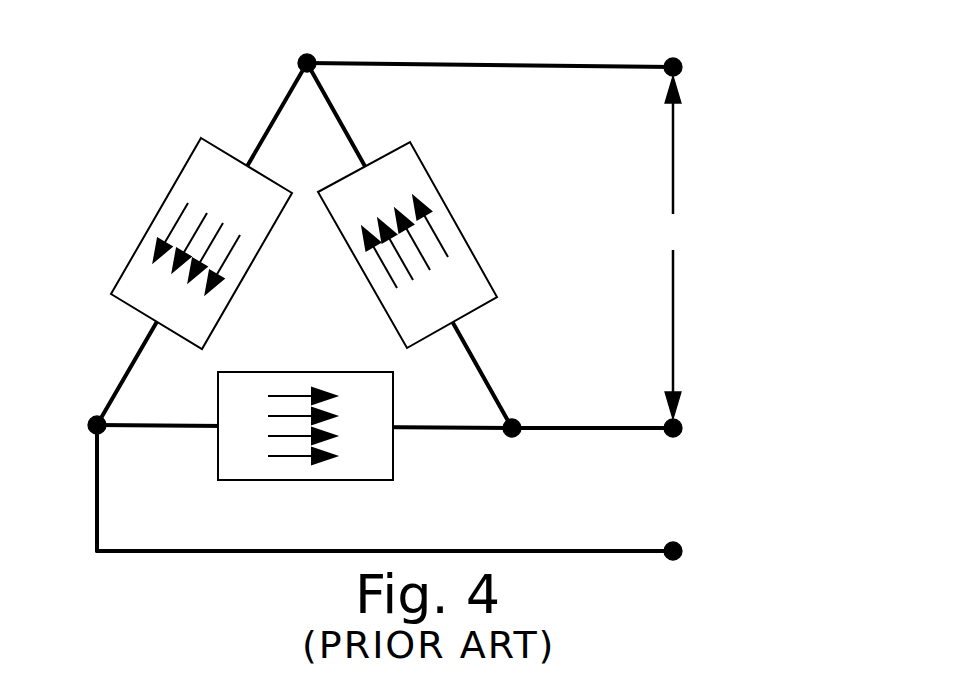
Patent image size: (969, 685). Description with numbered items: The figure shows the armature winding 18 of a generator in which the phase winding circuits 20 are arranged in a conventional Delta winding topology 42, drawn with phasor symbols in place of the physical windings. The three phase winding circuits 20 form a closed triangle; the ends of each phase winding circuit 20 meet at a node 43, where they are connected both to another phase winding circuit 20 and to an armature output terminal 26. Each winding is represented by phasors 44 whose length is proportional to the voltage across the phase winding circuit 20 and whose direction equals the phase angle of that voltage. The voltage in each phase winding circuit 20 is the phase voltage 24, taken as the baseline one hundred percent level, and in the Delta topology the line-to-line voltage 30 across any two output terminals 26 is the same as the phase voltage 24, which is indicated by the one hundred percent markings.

The armature winding 18 is at (178, 115).
The phase winding circuit 20 is at (423, 153).
The phase voltage 24 is at (488, 200).
The output terminal 26 is at (683, 65).
The line-to-line voltage 30 is at (687, 215).
The Delta winding topology 42 is at (293, 297).
The node 43 is at (313, 53).
The phasor 44 is at (292, 455).